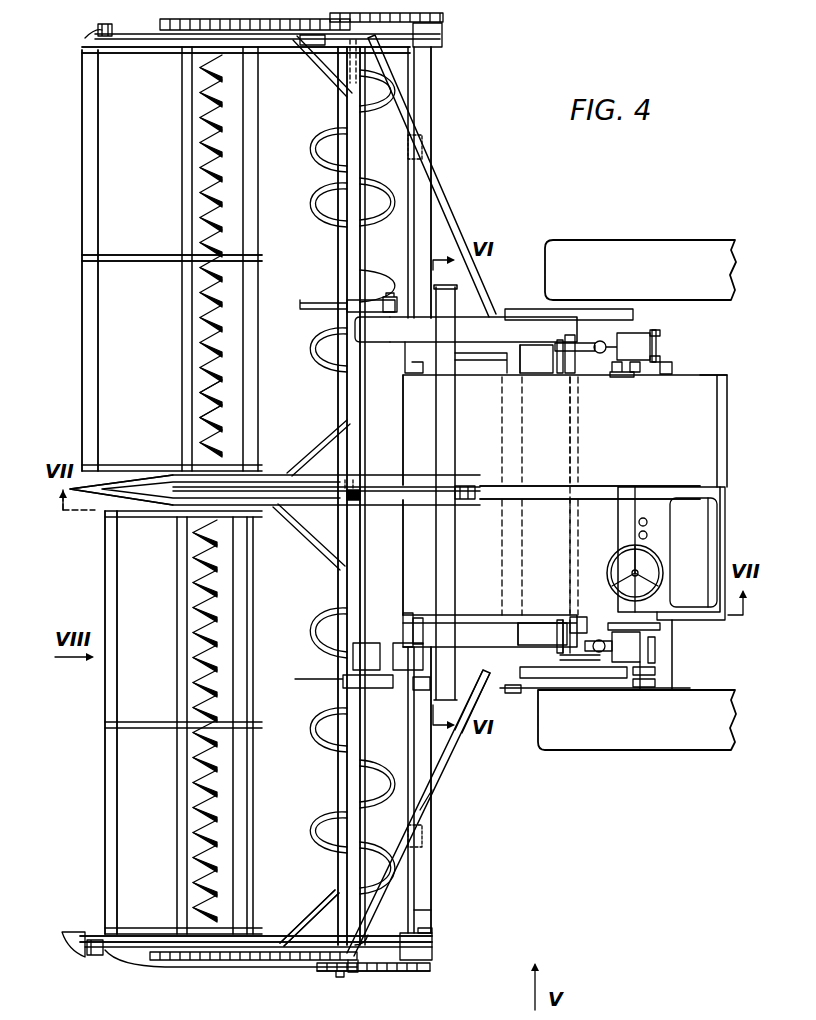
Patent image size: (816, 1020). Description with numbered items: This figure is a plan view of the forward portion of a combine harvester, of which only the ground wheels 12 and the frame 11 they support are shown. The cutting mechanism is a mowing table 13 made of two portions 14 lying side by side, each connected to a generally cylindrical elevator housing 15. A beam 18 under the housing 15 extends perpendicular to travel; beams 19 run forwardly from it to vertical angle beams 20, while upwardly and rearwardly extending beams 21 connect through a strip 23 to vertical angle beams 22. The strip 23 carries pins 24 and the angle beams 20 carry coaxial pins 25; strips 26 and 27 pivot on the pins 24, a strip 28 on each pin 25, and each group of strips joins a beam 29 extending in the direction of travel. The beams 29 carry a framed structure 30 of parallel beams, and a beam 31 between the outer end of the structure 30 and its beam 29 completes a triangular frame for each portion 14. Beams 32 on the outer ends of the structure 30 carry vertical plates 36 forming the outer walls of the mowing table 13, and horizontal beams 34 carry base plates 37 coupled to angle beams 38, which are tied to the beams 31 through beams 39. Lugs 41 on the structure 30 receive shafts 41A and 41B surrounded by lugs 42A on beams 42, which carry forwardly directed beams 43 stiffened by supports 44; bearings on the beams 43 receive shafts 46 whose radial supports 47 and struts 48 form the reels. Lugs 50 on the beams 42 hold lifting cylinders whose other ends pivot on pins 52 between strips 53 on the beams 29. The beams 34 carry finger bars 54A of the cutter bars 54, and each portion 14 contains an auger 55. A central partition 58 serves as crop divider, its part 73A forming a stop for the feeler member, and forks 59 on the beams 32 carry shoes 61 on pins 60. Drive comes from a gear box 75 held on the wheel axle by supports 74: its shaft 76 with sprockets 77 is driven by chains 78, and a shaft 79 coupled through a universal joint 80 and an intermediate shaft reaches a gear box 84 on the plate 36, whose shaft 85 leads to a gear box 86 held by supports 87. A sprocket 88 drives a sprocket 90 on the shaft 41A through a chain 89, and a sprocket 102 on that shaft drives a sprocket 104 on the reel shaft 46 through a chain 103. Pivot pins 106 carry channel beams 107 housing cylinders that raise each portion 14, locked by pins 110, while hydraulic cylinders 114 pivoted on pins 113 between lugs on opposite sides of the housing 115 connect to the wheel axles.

The frame 11 is at (700, 378).
The ground wheels 12 is at (700, 240).
The mowing table 13 is at (418, 878).
The portions 14 is at (82, 420).
The elevator housing 15 is at (403, 575).
The beam 18 is at (498, 440).
The beams 19 is at (470, 375).
The angle beams 20 is at (416, 618).
The beams 21 is at (528, 378).
The angle beams 22 is at (573, 378).
The strip 23 is at (572, 468).
The pins 24 is at (560, 378).
The pin 25 is at (420, 373).
The strip 26 is at (578, 680).
The strip 27 is at (560, 650).
The strip 28 is at (405, 628).
The beam 29 is at (533, 343).
The framed structure 30 is at (347, 280).
The beam 31 is at (440, 205).
The beams 32 is at (130, 30).
The horizontal beam 34 is at (282, 756).
The vertical plate 36 is at (138, 47).
The base plate 37 is at (420, 115).
The angle beam 38 is at (422, 145).
The beam 39 is at (432, 800).
The lugs 41 is at (357, 75).
The shaft 41A is at (352, 972).
The shaft 41B is at (350, 475).
The beams 42 is at (347, 210).
The lugs 42A is at (335, 78).
The beams 43 is at (340, 35).
The supports 44 is at (310, 912).
The shafts 46 is at (170, 55).
The radial supports 47 is at (135, 261).
The struts 48 is at (98, 165).
The lugs 50 is at (347, 304).
The pin 52 is at (392, 297).
The strips 53 is at (385, 343).
The cutter bar 54 is at (200, 230).
The finger bar 54A is at (200, 410).
The auger 55 is at (312, 160).
The partition 58 is at (535, 500).
The forks 59 is at (88, 957).
The pins 60 is at (82, 36).
The shoes 61 is at (240, 8).
The part 73A is at (90, 505).
The supports 74 is at (660, 333).
The gear box 75 is at (656, 346).
The shaft 76 is at (636, 378).
The sprockets 77 is at (614, 378).
The chains 78 is at (670, 378).
The shaft 79 is at (628, 346).
The universal joint 80 is at (583, 487).
The gear box 84 is at (437, 665).
The shaft 85 is at (420, 908).
The gear box 86 is at (443, 36).
The supports 87 is at (430, 935).
The sprocket 88 is at (430, 970).
The chain 89 is at (440, 22).
The sprocket 90 is at (320, 972).
The sprocket 102 is at (370, 960).
The chain 103 is at (275, 24).
The sprocket 104 is at (120, 968).
The pivot pins 106 is at (470, 500).
The channel beam 107 is at (452, 432).
The pins 110 is at (415, 690).
The pins 113 is at (512, 692).
The hydraulic cylinders 114 is at (603, 309).
The housing 115 is at (650, 687).